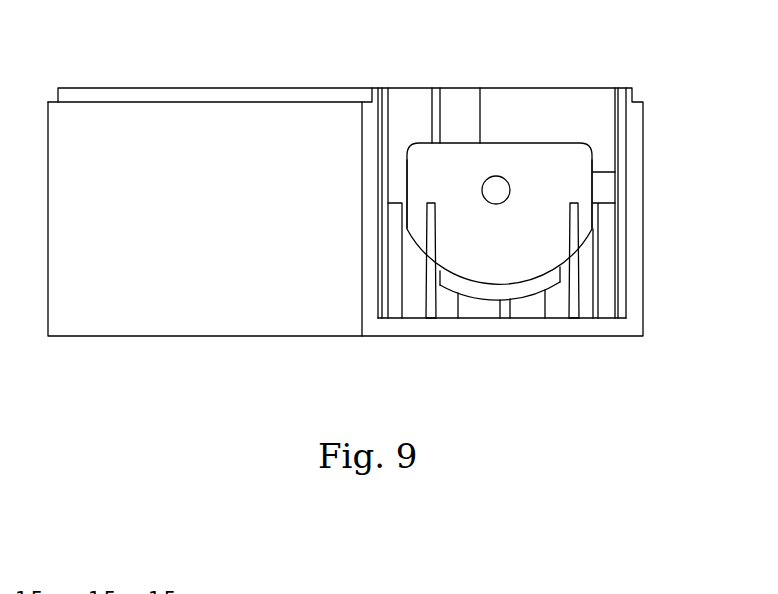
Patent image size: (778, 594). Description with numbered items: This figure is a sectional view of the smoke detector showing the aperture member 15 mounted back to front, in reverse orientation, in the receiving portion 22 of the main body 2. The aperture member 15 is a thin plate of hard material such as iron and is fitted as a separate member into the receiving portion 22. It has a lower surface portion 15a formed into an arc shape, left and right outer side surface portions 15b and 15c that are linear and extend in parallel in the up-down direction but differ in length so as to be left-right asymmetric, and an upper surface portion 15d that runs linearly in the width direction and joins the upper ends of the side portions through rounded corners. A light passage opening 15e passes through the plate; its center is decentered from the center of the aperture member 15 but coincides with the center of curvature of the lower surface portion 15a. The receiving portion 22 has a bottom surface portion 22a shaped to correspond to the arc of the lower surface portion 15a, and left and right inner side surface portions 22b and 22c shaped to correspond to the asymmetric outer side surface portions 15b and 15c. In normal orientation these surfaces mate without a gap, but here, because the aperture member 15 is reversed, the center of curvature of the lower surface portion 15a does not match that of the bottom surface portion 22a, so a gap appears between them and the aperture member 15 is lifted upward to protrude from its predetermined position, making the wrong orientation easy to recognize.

The main body 2 is at (643, 198).
The receiving portion 22 is at (607, 291).
The bottom surface portion 22a is at (529, 295).
The left inner side surface portion 22b is at (412, 243).
The right inner side surface portion 22c is at (578, 265).
The aperture member 15 is at (560, 143).
The lower surface portion 15a is at (487, 292).
The left outer side surface portion 15b is at (593, 168).
The right outer side surface portion 15c is at (403, 178).
The upper surface portion 15d is at (457, 143).
The light passage opening 15e is at (496, 176).